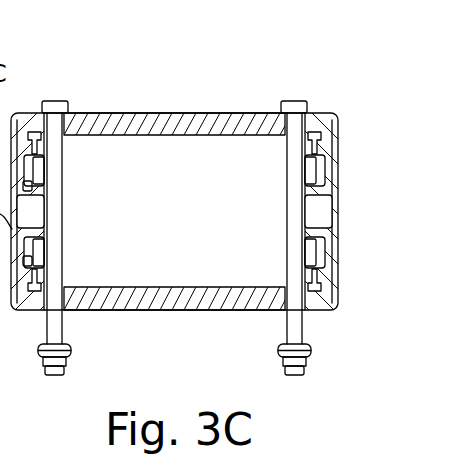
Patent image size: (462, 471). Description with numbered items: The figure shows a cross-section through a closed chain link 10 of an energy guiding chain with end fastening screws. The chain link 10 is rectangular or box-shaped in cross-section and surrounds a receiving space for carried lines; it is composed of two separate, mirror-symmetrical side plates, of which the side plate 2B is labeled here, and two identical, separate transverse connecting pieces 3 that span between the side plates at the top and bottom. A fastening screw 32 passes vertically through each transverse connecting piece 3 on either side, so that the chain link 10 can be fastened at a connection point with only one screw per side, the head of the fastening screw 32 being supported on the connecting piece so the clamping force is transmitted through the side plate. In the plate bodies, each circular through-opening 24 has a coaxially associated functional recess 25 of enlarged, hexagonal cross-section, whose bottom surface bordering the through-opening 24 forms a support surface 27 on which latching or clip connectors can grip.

The chain link 10 is at (325, 68).
The side plate 2B is at (336, 208).
The transverse connecting piece 3 is at (178, 112).
The fastening screw 32 is at (56, 100).
The functional recess 25 is at (41, 170).
The support surface 27 is at (30, 187).
The through-opening 24 is at (329, 170).